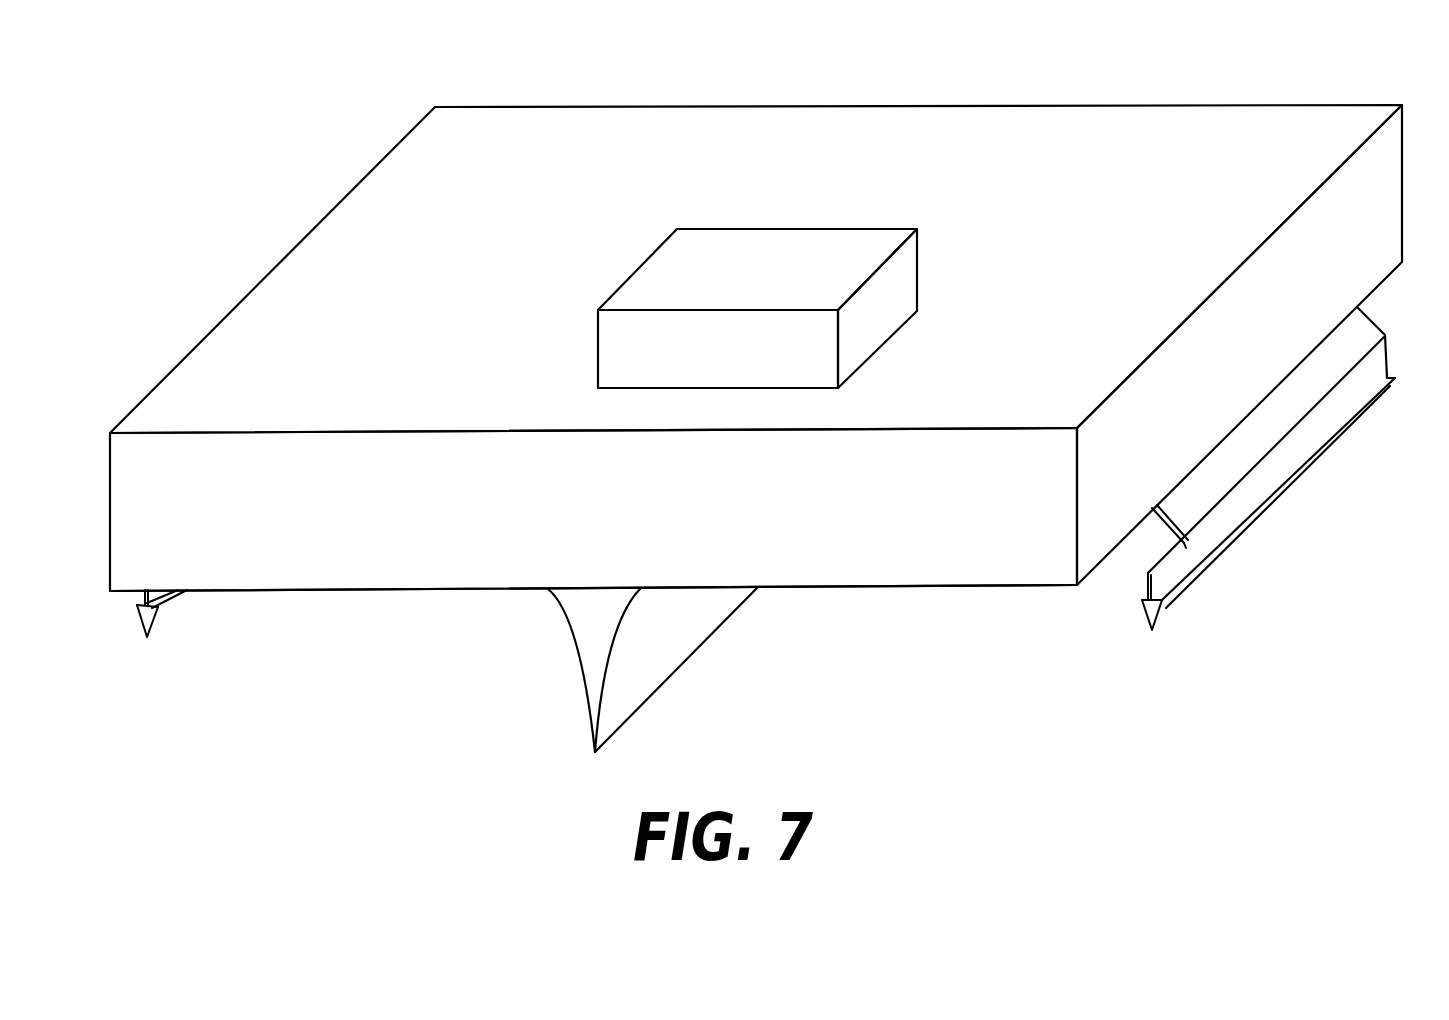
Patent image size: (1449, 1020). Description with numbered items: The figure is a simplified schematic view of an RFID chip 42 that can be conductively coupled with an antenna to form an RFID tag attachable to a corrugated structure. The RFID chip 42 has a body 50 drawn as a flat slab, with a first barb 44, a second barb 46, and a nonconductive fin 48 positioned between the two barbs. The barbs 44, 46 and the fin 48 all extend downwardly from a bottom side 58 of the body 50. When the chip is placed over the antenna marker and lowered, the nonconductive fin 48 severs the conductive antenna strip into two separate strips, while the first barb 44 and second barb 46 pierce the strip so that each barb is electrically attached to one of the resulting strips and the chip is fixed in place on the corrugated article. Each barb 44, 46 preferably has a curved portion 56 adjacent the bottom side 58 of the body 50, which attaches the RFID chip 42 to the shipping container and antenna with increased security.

The RFID chip 42 is at (840, 243).
The first barb 44 is at (155, 618).
The second barb 46 is at (1188, 540).
The nonconductive fin 48 is at (667, 657).
The body 50 is at (1132, 132).
The curved portion 56 is at (1387, 333).
The bottom side 58 is at (923, 585).